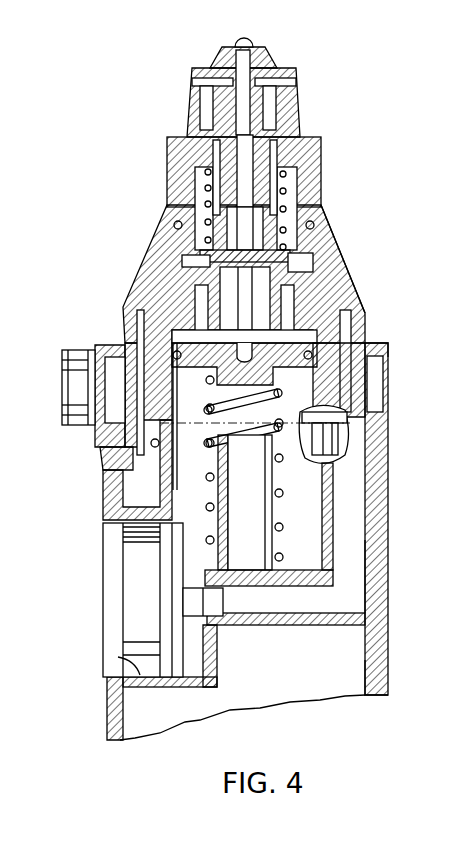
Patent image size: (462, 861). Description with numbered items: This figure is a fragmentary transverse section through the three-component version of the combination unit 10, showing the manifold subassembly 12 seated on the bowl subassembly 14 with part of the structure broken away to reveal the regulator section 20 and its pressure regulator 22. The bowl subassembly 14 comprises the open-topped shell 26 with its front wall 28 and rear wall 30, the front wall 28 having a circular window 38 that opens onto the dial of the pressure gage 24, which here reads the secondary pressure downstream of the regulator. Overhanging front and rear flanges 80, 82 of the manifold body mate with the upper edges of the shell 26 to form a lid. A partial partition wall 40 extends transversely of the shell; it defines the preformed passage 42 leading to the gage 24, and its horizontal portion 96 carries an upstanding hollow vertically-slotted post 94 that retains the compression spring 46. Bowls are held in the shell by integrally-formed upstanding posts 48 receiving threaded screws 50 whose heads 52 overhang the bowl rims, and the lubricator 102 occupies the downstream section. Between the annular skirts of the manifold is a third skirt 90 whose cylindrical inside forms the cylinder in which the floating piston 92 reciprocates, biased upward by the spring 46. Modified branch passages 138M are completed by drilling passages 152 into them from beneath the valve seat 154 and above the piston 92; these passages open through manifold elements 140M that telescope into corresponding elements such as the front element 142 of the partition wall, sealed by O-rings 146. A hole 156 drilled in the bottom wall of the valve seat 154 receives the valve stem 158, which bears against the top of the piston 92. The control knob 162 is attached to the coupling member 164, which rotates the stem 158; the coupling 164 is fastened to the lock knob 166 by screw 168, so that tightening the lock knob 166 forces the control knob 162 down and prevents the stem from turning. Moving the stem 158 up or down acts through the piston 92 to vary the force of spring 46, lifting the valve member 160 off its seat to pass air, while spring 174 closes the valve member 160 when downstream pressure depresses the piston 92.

The manifold 10 is at (344, 116).
The manifold subassembly 12 is at (335, 249).
The bowl subassembly 14 is at (377, 620).
The regulator section 20 is at (348, 282).
The pressure regulator 22 is at (295, 203).
The pressure gage 24 is at (117, 583).
The shell 26 is at (377, 503).
The front wall 28 is at (110, 717).
The rear wall 30 is at (378, 660).
The circular window 38 is at (118, 657).
The partition wall 40 is at (353, 588).
The passage 42 is at (377, 578).
The compression spring 46 is at (283, 527).
The upstanding post 48 is at (340, 445).
The threaded screw 50 is at (390, 381).
The screw head 52 is at (338, 408).
The front flange 80 is at (110, 343).
The rear flange 82 is at (390, 345).
The third skirt 90 is at (198, 410).
The piston 92 is at (270, 368).
The hollow post 94 is at (227, 535).
The horizontal portion 96 is at (283, 586).
The lubricator 102 is at (160, 273).
The modified branch passage 138M is at (123, 305).
The manifold element 140M is at (123, 443).
The front element 142 is at (121, 488).
The O-ring 146 is at (103, 460).
The drilled passage 152 is at (137, 282).
The valve seat 154 is at (343, 263).
The hole 156 is at (255, 416).
The valve stem 158 is at (173, 255).
The valve member 160 is at (205, 175).
The control knob 162 is at (297, 80).
The coupling member 164 is at (260, 116).
The lock knob 166 is at (277, 54).
The screw 168 is at (250, 44).
The spring 174 is at (215, 203).